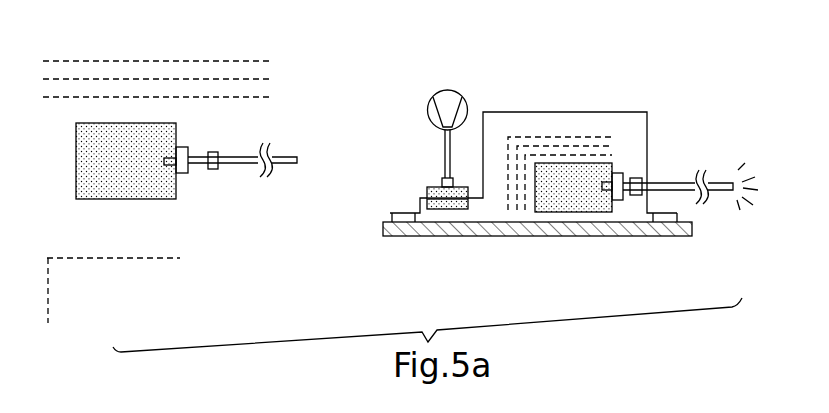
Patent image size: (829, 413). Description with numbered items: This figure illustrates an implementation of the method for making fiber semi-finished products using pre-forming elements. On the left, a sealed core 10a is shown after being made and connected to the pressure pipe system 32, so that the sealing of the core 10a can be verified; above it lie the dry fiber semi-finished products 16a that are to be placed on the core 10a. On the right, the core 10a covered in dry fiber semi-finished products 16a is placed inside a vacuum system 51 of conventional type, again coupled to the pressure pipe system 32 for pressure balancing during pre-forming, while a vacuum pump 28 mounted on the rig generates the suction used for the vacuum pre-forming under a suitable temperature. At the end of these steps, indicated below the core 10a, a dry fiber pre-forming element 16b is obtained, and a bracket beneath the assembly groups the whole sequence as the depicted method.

The dry fiber semi-finished products 16a is at (84, 97).
The sealed core 10a is at (62, 148).
The pressure pipe system 32 is at (285, 167).
The vacuum pump 28 is at (445, 90).
The vacuum system 51 is at (603, 104).
The dry fiber pre-forming element 16b is at (109, 258).